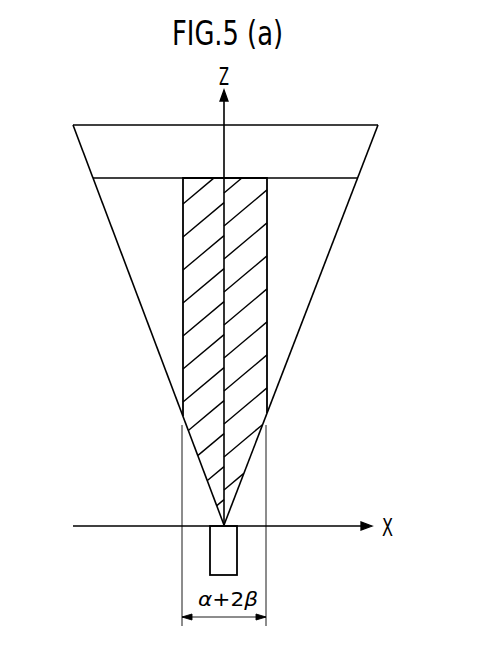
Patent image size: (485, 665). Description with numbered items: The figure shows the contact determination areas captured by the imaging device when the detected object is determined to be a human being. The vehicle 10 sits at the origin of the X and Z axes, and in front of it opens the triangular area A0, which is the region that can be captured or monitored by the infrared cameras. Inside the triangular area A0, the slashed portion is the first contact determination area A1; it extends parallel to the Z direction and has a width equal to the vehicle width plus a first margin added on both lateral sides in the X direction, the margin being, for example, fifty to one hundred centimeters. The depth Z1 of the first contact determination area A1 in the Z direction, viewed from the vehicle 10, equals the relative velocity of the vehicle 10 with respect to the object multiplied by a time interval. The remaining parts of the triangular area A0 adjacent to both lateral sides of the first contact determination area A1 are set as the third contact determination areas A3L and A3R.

The triangular area A0 is at (366, 157).
The first contact determination area A1 is at (260, 315).
The third contact determination area A3L is at (104, 198).
The third contact determination area A3R is at (348, 198).
The depth of the first contact determination area Z1 is at (224, 178).
The vehicle 10 is at (238, 548).